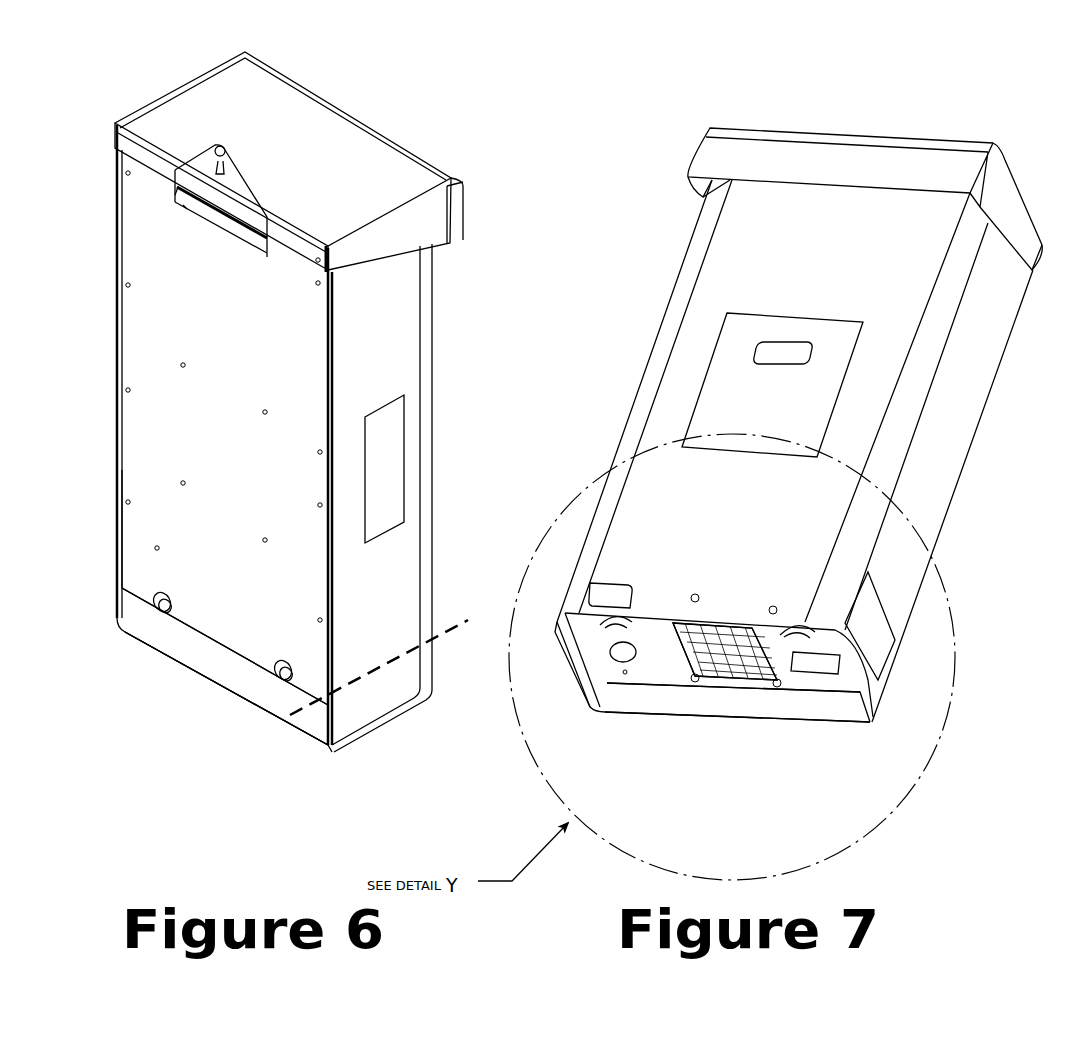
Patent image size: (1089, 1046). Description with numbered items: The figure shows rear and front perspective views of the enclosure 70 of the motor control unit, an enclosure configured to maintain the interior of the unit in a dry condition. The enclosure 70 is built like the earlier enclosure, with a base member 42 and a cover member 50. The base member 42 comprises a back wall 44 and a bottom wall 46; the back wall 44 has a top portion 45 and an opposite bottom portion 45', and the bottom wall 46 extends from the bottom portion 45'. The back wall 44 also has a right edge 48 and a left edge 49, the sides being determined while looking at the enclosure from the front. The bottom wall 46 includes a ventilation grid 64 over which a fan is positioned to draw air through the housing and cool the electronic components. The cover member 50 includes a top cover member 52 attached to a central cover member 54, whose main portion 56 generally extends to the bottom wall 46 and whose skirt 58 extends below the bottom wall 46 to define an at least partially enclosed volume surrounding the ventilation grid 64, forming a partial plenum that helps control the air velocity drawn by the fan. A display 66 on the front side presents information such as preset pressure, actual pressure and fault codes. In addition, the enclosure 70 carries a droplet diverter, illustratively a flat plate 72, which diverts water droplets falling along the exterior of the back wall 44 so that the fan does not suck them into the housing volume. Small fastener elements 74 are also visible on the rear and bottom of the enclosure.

In FIG. 6, the base member 42 is at (120, 684).
In FIG. 7, the base member 42 is at (712, 756).
In FIG. 6, the back wall 44 is at (210, 612).
In FIG. 6, the top portion 45 is at (87, 371).
In FIG. 6, the bottom portion 45' is at (88, 544).
In FIG. 7, the bottom wall 46 is at (675, 672).
In FIG. 6, the right edge 48 is at (120, 395).
In FIG. 6, the left edge 49 is at (325, 362).
In FIG. 6, the cover member 50 is at (488, 128).
In FIG. 6, the top cover member 52 is at (390, 163).
In FIG. 7, the top cover member 52 is at (950, 148).
In FIG. 6, the central cover member 54 is at (430, 292).
In FIG. 7, the central cover member 54 is at (970, 410).
In FIG. 6, the main portion 56 is at (400, 622).
In FIG. 6, the skirt 58 is at (396, 690).
In FIG. 7, the skirt 58 is at (592, 676).
In FIG. 7, the ventilation grid 64 is at (752, 676).
In FIG. 7, the display 66 is at (755, 350).
In FIG. 6, the enclosure 70 is at (112, 92).
In FIG. 7, the enclosure 70 is at (678, 128).
In FIG. 6, the plate 72 is at (244, 690).
In FIG. 7, the plate 72 is at (642, 706).
In FIG. 6, the feet 74 is at (122, 597).
In FIG. 7, the feet 74 is at (838, 695).